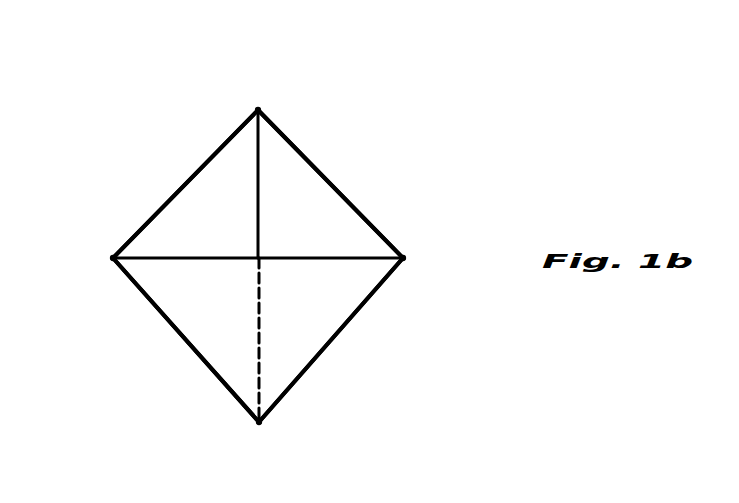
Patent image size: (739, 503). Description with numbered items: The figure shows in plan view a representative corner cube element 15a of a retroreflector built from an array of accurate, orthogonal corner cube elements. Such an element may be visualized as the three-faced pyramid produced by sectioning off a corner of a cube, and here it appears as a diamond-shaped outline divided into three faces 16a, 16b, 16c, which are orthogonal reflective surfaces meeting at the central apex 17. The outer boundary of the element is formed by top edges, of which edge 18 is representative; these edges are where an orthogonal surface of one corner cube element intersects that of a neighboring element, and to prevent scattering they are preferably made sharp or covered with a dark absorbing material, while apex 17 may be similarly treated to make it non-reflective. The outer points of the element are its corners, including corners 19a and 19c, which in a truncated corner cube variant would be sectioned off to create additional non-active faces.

The edge 18 is at (162, 203).
The face 16a is at (213, 325).
The face 16b is at (322, 200).
The face 16c is at (222, 190).
The corner cube element 15a is at (360, 353).
The apex 17 is at (259, 422).
The corner 19a is at (258, 110).
The corner 19c is at (113, 258).